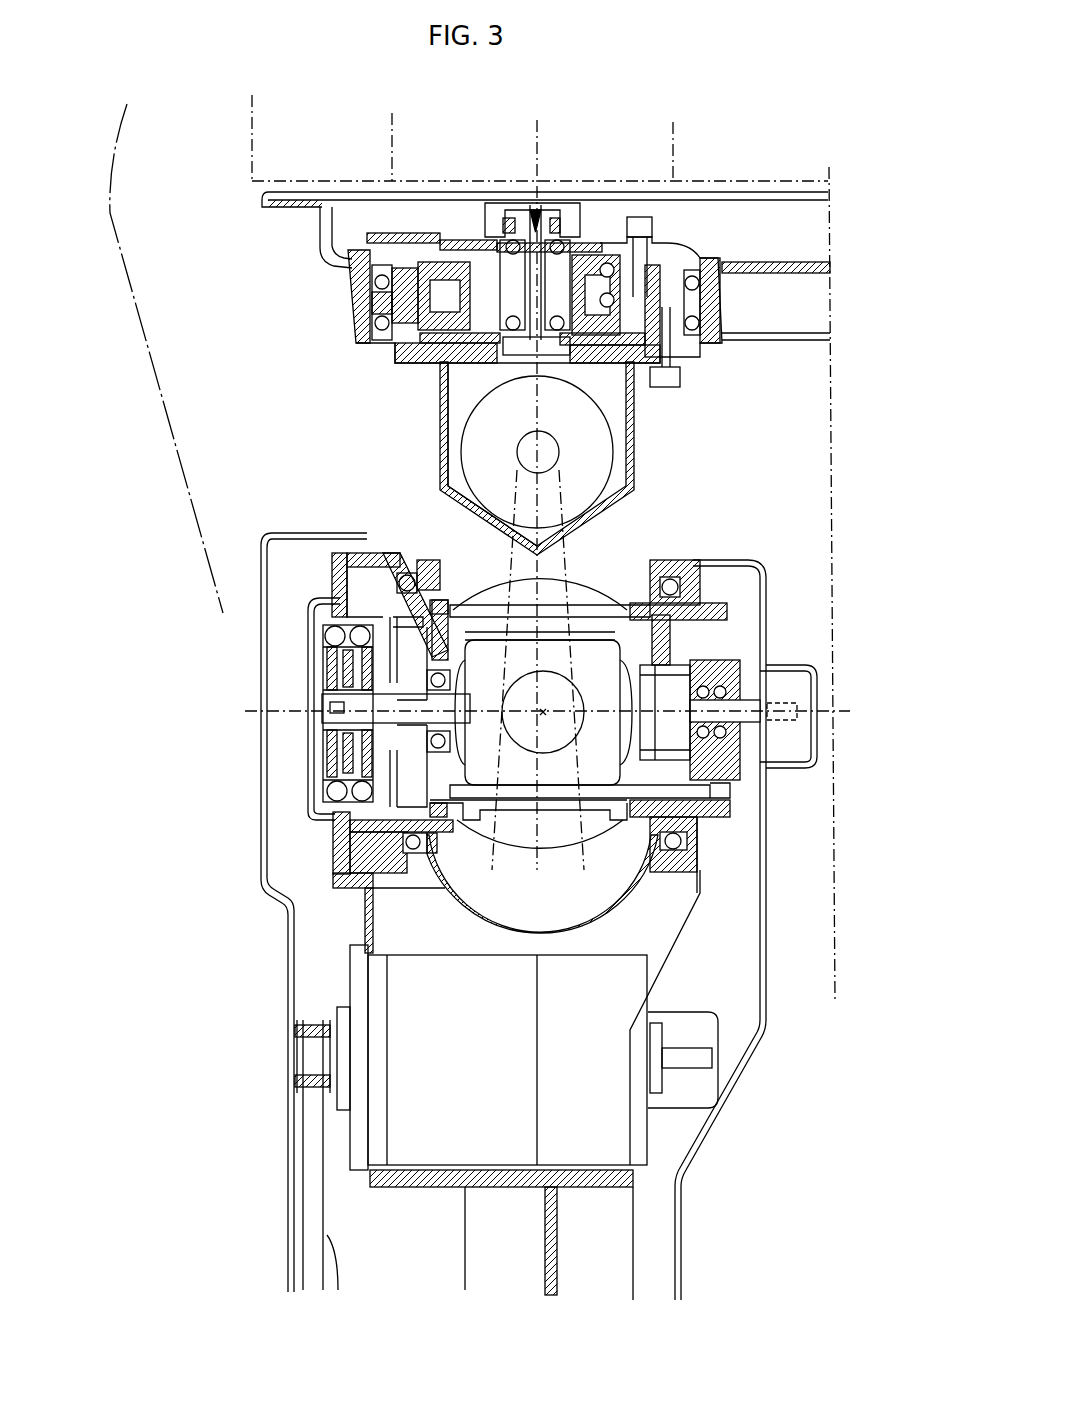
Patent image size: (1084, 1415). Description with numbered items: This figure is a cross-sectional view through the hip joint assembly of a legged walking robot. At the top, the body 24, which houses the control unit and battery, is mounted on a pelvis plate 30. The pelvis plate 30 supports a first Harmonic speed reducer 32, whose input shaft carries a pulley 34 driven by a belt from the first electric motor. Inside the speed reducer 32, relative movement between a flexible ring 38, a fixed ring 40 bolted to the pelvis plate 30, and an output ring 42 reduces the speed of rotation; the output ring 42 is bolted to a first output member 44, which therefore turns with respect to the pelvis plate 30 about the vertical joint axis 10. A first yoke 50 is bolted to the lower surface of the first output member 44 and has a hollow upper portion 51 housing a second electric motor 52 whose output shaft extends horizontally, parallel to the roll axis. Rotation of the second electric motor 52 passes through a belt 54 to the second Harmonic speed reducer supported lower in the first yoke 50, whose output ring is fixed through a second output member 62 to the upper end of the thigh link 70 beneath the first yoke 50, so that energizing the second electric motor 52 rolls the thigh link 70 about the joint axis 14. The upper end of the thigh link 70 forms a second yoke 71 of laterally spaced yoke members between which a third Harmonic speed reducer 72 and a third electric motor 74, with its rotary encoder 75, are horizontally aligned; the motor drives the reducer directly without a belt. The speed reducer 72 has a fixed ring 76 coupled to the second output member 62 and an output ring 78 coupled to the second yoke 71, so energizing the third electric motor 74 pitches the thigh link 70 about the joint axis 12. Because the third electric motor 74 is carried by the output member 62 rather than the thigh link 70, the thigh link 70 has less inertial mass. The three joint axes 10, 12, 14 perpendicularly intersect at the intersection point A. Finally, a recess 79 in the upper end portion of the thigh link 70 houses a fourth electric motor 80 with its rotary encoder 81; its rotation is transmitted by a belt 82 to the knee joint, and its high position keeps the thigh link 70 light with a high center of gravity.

The joint axis 10 is at (533, 155).
The joint axis 12 is at (287, 710).
The joint axis 14 is at (547, 705).
The body 24 is at (247, 135).
The pelvis plate 30 is at (330, 253).
The first Harmonic speed reducer 32 is at (607, 340).
The pulley 34 is at (567, 207).
The flexible ring 38 is at (448, 238).
The fixed ring 40 is at (452, 268).
The output ring 42 is at (436, 262).
The first output member 44 is at (395, 346).
The first yoke 50 is at (440, 410).
The hollow upper portion 51 is at (468, 383).
The second electric motor 52 is at (597, 468).
The belt 54 is at (573, 558).
The second output member 62 is at (447, 610).
The thigh link 70 is at (407, 902).
The second yoke 71 is at (397, 560).
The third Harmonic speed reducer 72 is at (333, 677).
The third electric motor 74 is at (565, 770).
The rotary encoder 75 is at (792, 747).
The fixed ring 76 is at (337, 817).
The output ring 78 is at (310, 813).
The recess 79 is at (653, 960).
The fourth electric motor 80 is at (600, 1130).
The rotary encoder 81 is at (690, 1088).
The belt 82 is at (310, 1147).
The intersection point A is at (543, 707).